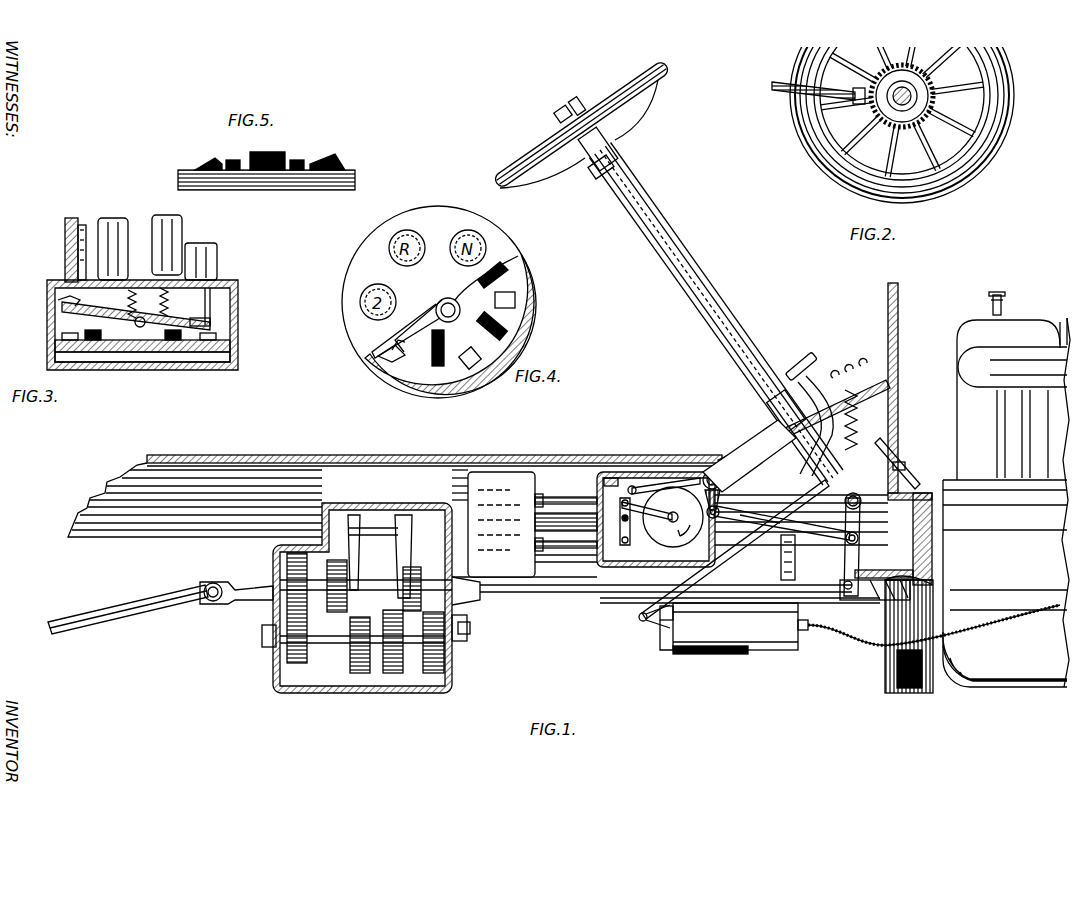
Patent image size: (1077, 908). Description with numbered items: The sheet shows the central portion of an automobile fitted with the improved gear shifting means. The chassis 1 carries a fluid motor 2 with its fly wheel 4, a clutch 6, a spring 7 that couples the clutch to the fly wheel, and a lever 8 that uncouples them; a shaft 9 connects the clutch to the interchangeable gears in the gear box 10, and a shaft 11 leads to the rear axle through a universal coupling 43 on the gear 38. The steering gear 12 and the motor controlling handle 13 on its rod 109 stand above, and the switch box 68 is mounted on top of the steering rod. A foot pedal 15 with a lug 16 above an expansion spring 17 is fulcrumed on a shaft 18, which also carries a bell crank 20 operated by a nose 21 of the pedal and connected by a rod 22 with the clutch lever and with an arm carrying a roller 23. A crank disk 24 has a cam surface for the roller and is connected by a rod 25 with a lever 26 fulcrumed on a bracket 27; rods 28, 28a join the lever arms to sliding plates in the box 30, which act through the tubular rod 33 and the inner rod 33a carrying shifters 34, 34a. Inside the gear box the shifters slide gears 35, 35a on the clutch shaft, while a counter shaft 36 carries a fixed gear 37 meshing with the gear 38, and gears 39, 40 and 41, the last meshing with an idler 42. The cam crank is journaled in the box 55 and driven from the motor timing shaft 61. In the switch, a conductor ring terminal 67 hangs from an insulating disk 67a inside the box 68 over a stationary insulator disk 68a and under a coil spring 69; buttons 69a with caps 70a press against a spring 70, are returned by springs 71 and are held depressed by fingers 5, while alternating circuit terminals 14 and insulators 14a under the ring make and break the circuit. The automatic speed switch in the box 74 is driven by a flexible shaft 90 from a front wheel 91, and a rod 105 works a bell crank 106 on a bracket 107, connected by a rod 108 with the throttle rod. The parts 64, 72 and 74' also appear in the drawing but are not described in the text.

In FIG. 1, the chassis 1 is at (232, 490).
In FIG. 1, the fluid motor 2 is at (1006, 489).
In FIG. 1, the fly wheel 4 is at (924, 688).
In FIG. 3, the finger 5 is at (60, 282).
In FIG. 4, the finger 5 is at (395, 376).
In FIG. 1, the clutch 6 is at (884, 680).
In FIG. 1, the spring 7 is at (868, 596).
In FIG. 1, the clutch lever 8 is at (858, 575).
In FIG. 1, the clutch shaft 9 is at (600, 593).
In FIG. 1, the gear box 10 is at (372, 688).
In FIG. 1, the rear axle driving shaft 11 is at (145, 598).
In FIG. 1, the steering gear 12 is at (548, 152).
In FIG. 1, the motor controlling handle 13 is at (580, 182).
In FIG. 5, the circuit terminals 14 is at (233, 160).
In FIG. 3, the circuit terminals 14 is at (62, 336).
In FIG. 4, the circuit terminals 14 is at (515, 297).
In FIG. 5, the insulators 14a is at (212, 158).
In FIG. 3, the insulators 14a is at (90, 332).
In FIG. 4, the insulators 14a is at (505, 335).
In FIG. 1, the foot pedal 15 is at (800, 362).
In FIG. 1, the lug 16 is at (880, 400).
In FIG. 1, the expansion spring 17 is at (862, 436).
In FIG. 1, the shaft 18 is at (712, 470).
In FIG. 1, the bell crank 20 is at (702, 473).
In FIG. 1, the nose 21 is at (756, 507).
In FIG. 1, the rod 22 is at (815, 527).
In FIG. 1, the roller 23 is at (640, 486).
In FIG. 1, the crank disk 24 is at (706, 525).
In FIG. 1, the rod 25 is at (650, 508).
In FIG. 1, the lever 26 is at (619, 512).
In FIG. 1, the bracket 27 is at (604, 560).
In FIG. 1, the rod 28 is at (566, 497).
In FIG. 1, the rod 28a is at (572, 549).
In FIG. 1, the box 30 is at (500, 486).
In FIG. 1, the tubular rod 33 is at (412, 520).
In FIG. 1, the rod 33a is at (372, 528).
In FIG. 1, the shifter 34 is at (400, 548).
In FIG. 1, the shifter 34a is at (352, 515).
In FIG. 1, the gear 35 is at (418, 572).
In FIG. 1, the gear 35a is at (330, 560).
In FIG. 1, the counter shaft 36 is at (320, 647).
In FIG. 1, the gear 37 is at (282, 657).
In FIG. 1, the gear 38 is at (284, 562).
In FIG. 1, the gear 39 is at (356, 675).
In FIG. 1, the gear 40 is at (392, 675).
In FIG. 1, the gear 41 is at (440, 665).
In FIG. 1, the idler 42 is at (458, 615).
In FIG. 1, the universal coupling 43 is at (210, 600).
In FIG. 1, the box 55 is at (612, 478).
In FIG. 1, the timing shaft 61 is at (778, 515).
In FIG. 1, the arm 64 is at (705, 500).
In FIG. 3, the terminal 67 is at (62, 308).
In FIG. 3, the insulating disk 67a is at (58, 300).
In FIG. 4, the insulating disk 67a is at (378, 356).
In FIG. 3, the switch box 68 is at (225, 343).
In FIG. 4, the switch box 68 is at (445, 307).
In FIG. 1, the switch box 68 is at (582, 108).
In FIG. 5, the stationary insulator disk 68a is at (252, 182).
In FIG. 3, the stationary insulator disk 68a is at (135, 352).
In FIG. 4, the stationary insulator disk 68a is at (495, 285).
In FIG. 3, the coil spring 69 is at (132, 290).
In FIG. 3, the button 69a is at (78, 240).
In FIG. 4, the button 69a is at (392, 356).
In FIG. 3, the spring 70 is at (212, 322).
In FIG. 3, the cap 70a is at (90, 218).
In FIG. 1, the cap 70a is at (558, 116).
In FIG. 3, the spring 71 is at (65, 230).
In FIG. 1, the spring hooks 72 is at (862, 362).
In FIG. 1, the box 74 is at (740, 636).
In FIG. 1, the bracket 74' is at (910, 463).
In FIG. 2, the flexible shaft 90 is at (782, 90).
In FIG. 1, the flexible shaft 90 is at (850, 636).
In FIG. 2, the front wheel 91 is at (826, 160).
In FIG. 1, the rod 105 is at (662, 650).
In FIG. 1, the bell crank 106 is at (642, 622).
In FIG. 1, the bracket 107 is at (673, 620).
In FIG. 1, the rod 108 is at (771, 557).
In FIG. 1, the rod 109 is at (705, 316).